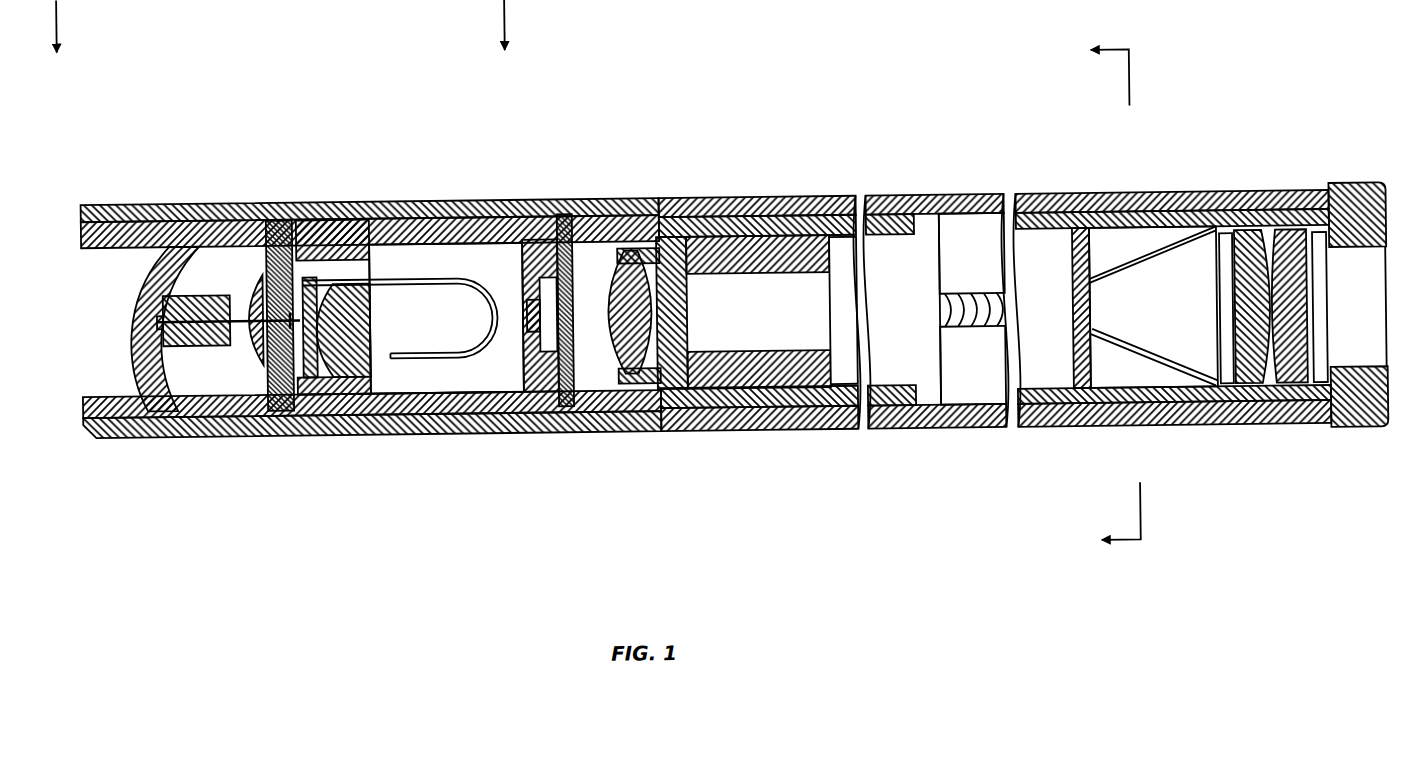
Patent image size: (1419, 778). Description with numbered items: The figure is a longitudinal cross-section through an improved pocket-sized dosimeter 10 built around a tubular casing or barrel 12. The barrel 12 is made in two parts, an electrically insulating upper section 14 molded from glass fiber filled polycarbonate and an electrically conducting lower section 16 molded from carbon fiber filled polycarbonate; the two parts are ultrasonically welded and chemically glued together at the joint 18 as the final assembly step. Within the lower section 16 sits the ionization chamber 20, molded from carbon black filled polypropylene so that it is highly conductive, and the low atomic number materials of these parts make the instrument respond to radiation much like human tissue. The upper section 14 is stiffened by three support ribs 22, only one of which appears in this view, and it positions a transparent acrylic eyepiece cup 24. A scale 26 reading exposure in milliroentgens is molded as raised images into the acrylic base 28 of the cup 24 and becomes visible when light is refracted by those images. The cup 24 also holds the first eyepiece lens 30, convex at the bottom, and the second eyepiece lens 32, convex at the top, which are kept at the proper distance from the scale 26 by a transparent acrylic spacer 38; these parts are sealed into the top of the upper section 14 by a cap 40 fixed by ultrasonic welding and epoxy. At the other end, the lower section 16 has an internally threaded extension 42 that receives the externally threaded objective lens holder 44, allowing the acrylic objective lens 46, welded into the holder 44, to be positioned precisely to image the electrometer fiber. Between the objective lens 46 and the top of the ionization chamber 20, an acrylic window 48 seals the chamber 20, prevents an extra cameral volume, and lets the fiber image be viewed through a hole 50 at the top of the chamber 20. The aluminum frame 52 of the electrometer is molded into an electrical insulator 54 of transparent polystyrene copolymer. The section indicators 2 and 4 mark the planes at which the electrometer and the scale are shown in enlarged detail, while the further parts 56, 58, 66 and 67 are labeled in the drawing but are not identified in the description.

The section line 2- 2 is at (282, 50).
The section line 4- 4 is at (1103, 298).
The dosimeter 10 is at (1312, 174).
The barrel 12 is at (932, 445).
The upper section 14 is at (800, 213).
The lower section 16 is at (132, 206).
The joint 18 is at (656, 212).
The ionization chamber 20 is at (424, 384).
The support ribs 22 is at (983, 341).
The eyepiece cup 24 is at (1228, 438).
The scale 26 is at (1082, 250).
The base 28 is at (1060, 386).
The first eyepiece lens 30 is at (1298, 210).
The second eyepiece lens 32 is at (1233, 210).
The spacer 38 is at (1120, 255).
The cap 40 is at (1391, 436).
The extension 42 is at (815, 442).
The objective lens holder 44 is at (736, 444).
The objective lens 46 is at (608, 336).
The window 48 is at (560, 220).
The hole 50 is at (507, 282).
The aluminum frame 52 is at (378, 206).
The electrical insulator 54 is at (354, 440).
The window lens 56 is at (140, 440).
The lens mount 58 is at (247, 206).
The adjusting screw 66 is at (246, 440).
The lens cup 67 is at (297, 206).